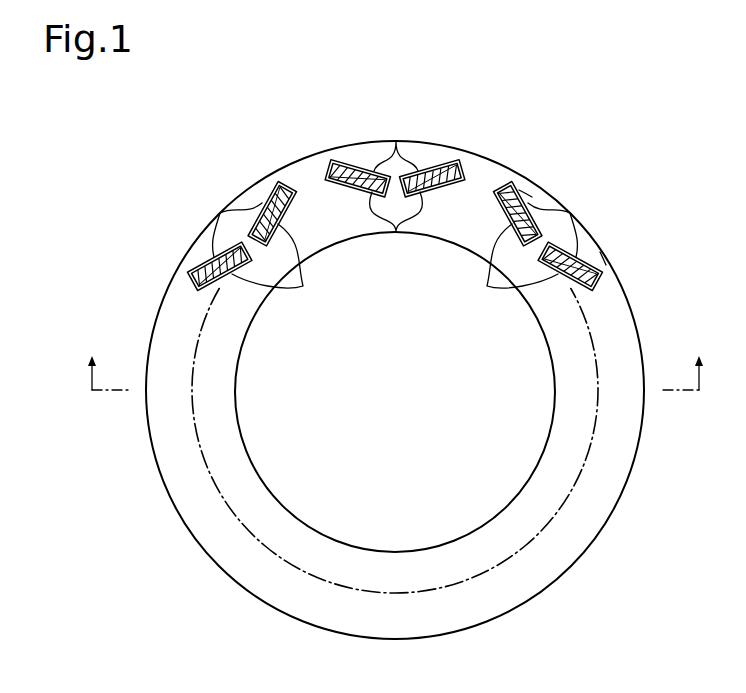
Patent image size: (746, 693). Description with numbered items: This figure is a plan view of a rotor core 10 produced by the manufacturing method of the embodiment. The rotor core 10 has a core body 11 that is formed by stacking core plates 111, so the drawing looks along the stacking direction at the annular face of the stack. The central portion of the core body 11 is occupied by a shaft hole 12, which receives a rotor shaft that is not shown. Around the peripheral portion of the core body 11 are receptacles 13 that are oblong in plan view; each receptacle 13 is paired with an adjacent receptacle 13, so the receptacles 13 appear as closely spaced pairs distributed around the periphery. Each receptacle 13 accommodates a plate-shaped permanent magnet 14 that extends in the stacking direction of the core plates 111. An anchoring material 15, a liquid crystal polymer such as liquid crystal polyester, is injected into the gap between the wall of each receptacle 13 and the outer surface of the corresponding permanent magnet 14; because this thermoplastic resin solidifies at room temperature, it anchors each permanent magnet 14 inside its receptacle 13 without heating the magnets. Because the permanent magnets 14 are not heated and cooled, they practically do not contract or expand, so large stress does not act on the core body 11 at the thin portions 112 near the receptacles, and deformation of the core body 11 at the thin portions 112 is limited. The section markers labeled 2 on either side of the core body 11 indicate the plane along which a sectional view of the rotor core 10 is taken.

The rotor core 10 is at (395, 351).
The core body 11 is at (408, 364).
The core plates 111 is at (408, 390).
The thin portions 112 is at (602, 204).
The shaft hole 12 is at (411, 392).
The receptacles 13 is at (395, 247).
The permanent magnet 14 is at (401, 196).
The anchoring material 15 is at (400, 180).
The section line 2 is at (395, 359).